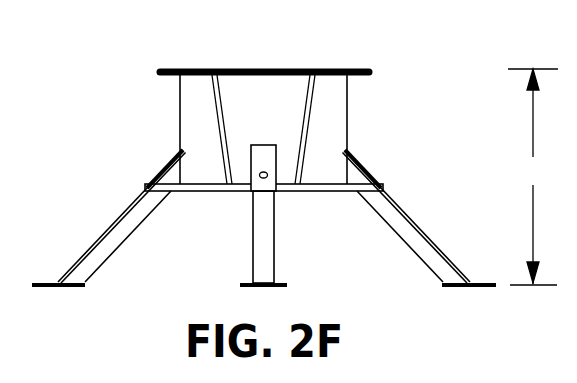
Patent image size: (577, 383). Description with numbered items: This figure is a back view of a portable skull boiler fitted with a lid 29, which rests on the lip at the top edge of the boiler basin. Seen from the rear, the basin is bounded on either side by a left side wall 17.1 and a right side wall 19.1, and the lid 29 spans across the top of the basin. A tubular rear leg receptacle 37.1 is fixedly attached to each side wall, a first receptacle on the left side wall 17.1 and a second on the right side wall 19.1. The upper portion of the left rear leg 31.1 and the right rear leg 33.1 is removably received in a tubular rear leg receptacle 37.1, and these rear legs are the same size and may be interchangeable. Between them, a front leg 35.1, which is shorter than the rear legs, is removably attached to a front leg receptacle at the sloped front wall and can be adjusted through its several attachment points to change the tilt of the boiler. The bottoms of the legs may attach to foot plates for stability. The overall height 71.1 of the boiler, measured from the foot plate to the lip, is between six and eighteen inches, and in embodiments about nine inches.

The lid 29 is at (375, 72).
The right side wall 19.1 is at (178, 128).
The left side wall 17.1 is at (349, 135).
The tubular rear leg receptacle 37.1 is at (145, 190).
The right rear leg 33.1 is at (90, 247).
The left rear leg 31.1 is at (415, 218).
The front leg 35.1 is at (274, 257).
The height 71.1 is at (533, 177).